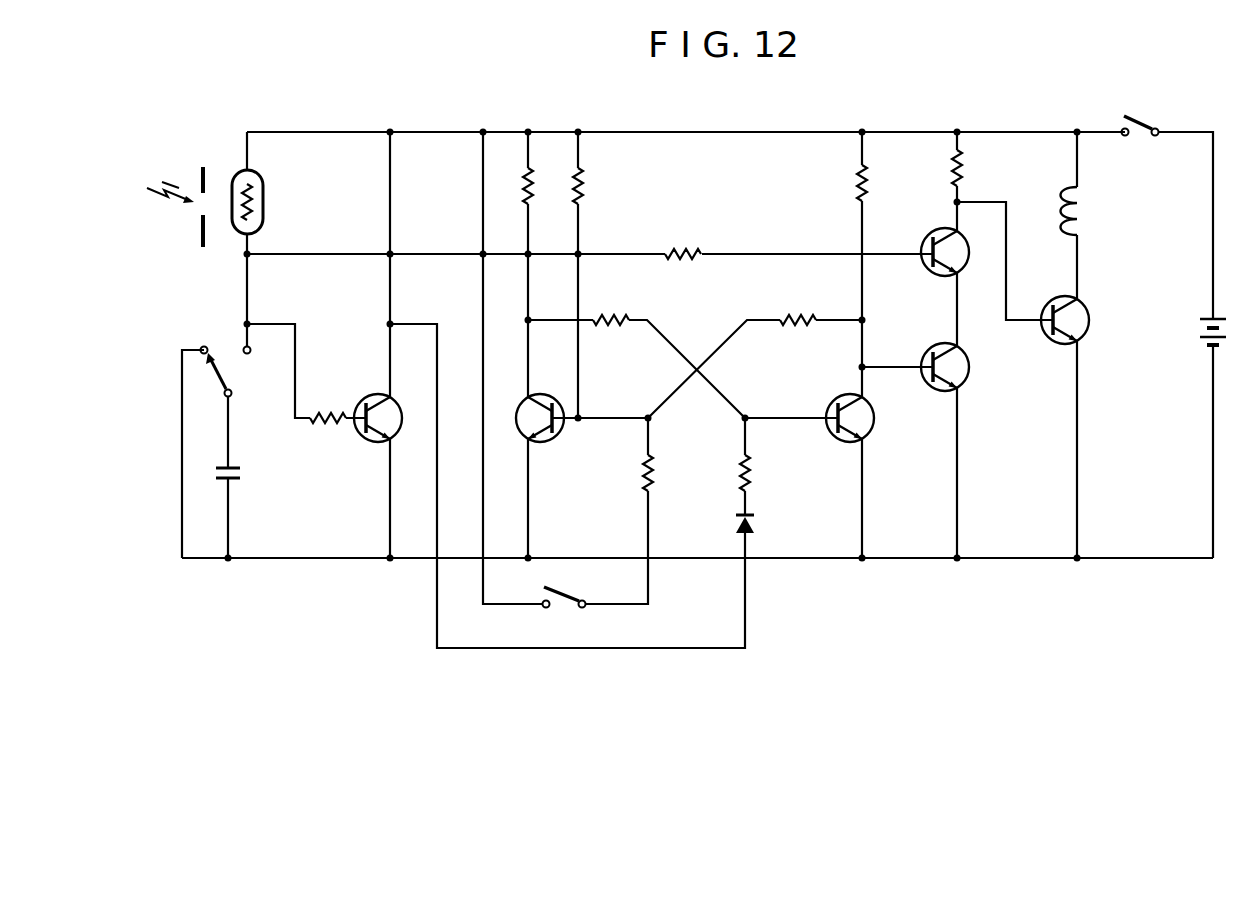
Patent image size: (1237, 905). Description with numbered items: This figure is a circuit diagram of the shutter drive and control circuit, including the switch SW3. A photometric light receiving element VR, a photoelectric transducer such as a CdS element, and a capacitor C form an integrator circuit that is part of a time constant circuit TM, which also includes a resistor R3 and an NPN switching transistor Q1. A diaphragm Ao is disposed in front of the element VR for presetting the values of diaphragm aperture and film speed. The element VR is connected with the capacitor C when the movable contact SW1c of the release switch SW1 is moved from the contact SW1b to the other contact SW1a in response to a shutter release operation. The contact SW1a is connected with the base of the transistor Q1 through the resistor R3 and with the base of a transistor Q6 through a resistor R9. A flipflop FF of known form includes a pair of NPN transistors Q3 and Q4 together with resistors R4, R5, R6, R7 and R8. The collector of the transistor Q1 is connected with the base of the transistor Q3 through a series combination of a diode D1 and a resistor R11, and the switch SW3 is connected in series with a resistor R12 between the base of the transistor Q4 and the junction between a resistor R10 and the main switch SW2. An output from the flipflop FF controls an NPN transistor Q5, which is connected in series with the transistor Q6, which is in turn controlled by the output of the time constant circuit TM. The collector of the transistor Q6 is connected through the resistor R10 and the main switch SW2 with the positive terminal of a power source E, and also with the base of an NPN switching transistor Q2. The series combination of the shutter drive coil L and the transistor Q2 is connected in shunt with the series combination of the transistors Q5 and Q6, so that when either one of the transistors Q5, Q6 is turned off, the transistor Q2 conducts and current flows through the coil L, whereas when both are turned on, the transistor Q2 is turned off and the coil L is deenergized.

The diaphragm Ao is at (198, 178).
The photometric light receiving element VR is at (263, 208).
The time constant circuit TM is at (300, 306).
The flipflop FF is at (710, 302).
The release switch SW1 is at (224, 338).
The contact SW1a is at (251, 356).
The contact SW1b is at (200, 346).
The movable contact SW1c is at (232, 397).
The capacitor C is at (240, 471).
The resistor R3 is at (331, 412).
The NPN switching transistor Q1 is at (378, 443).
The resistor R4 is at (532, 190).
The resistor R5 is at (582, 190).
The resistor R9 is at (682, 254).
The resistor R7 is at (610, 318).
The resistor R8 is at (800, 316).
The NPN transistor Q4 is at (550, 443).
The resistor R12 is at (655, 477).
The resistor R11 is at (751, 477).
The diode D1 is at (756, 524).
The switch SW3 is at (564, 608).
The NPN transistor Q3 is at (848, 443).
The resistor R6 is at (868, 186).
The resistor R10 is at (964, 172).
The NPN transistor Q6 is at (936, 274).
The NPN transistor Q5 is at (946, 392).
The NPN switching transistor Q2 is at (1048, 304).
The shutter drive coil L is at (1086, 226).
The main switch SW2 is at (1138, 122).
The power source E is at (1198, 336).